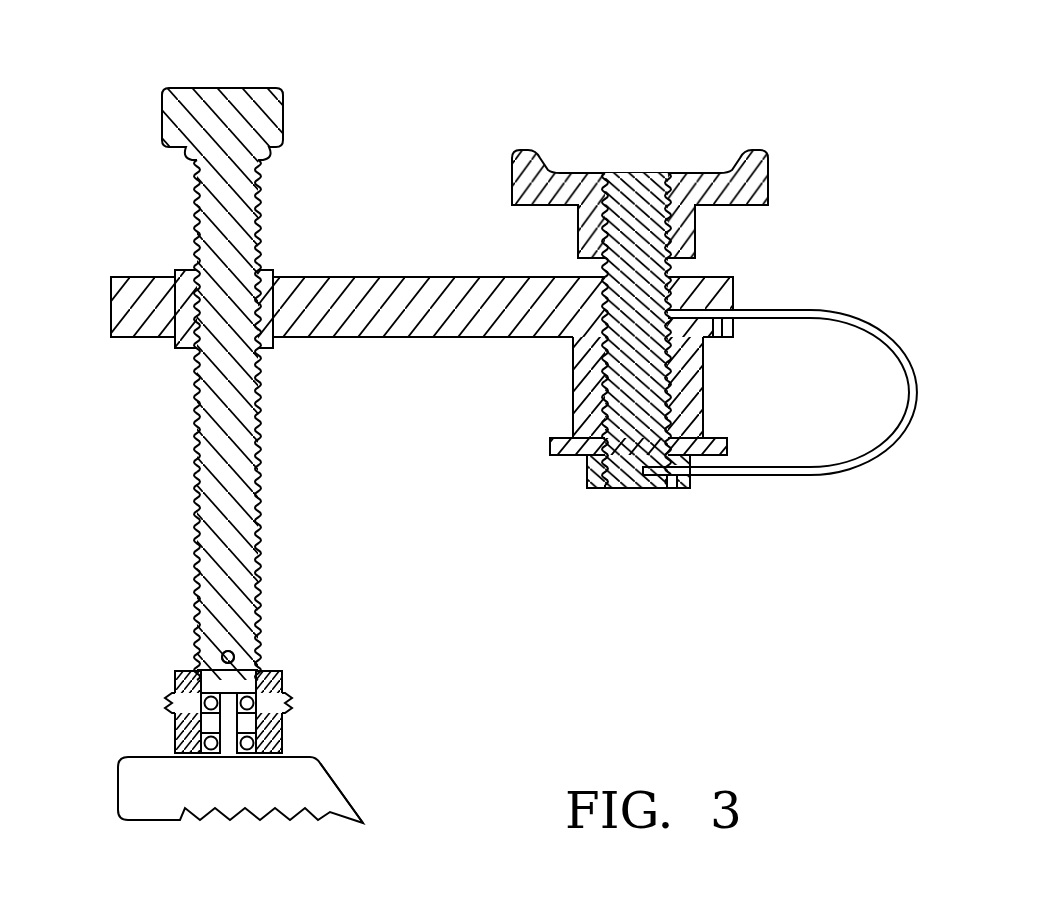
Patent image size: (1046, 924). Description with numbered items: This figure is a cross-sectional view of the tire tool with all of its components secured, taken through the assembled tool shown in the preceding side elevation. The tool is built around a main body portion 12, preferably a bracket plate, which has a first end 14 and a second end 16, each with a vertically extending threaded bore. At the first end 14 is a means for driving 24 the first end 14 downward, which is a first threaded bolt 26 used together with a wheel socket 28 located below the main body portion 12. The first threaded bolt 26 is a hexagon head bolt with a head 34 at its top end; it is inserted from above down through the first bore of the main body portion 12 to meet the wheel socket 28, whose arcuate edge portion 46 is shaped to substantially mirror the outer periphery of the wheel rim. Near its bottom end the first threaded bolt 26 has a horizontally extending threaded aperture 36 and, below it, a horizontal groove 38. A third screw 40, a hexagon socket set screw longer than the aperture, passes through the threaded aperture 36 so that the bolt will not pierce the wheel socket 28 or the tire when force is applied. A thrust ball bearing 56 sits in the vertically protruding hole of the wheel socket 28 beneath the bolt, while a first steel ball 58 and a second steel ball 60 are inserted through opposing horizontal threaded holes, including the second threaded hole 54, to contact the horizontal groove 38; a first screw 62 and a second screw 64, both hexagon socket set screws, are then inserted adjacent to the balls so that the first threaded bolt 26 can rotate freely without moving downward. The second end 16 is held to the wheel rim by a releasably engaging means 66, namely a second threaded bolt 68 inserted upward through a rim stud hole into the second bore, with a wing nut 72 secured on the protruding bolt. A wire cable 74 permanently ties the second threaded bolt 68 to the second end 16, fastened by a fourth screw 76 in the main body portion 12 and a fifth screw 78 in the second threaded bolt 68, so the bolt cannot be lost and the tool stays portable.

The main body portion 12 is at (402, 270).
The first end 14 is at (105, 275).
The second end 16 is at (752, 268).
The means for driving 24 is at (400, 832).
The first threaded bolt 26 is at (262, 447).
The wheel socket 28 is at (120, 790).
The head 34 is at (205, 90).
The horizontally extending threaded aperture 36 is at (245, 630).
The horizontal groove 38 is at (230, 695).
The third screw 40 is at (238, 655).
The arcuate edge portion 46 is at (333, 782).
The second threaded hole 54 is at (178, 678).
The thrust ball bearing 56 is at (248, 752).
The first steel ball 58 is at (192, 705).
The second steel ball 60 is at (278, 676).
The first screw 62 is at (168, 703).
The second screw 64 is at (289, 703).
The releasably engaging means 66 is at (558, 494).
The second threaded bolt 68 is at (633, 185).
The wing nut 72 is at (757, 153).
The wire cable 74 is at (855, 480).
The fourth screw 76 is at (718, 335).
The fifth screw 78 is at (672, 488).